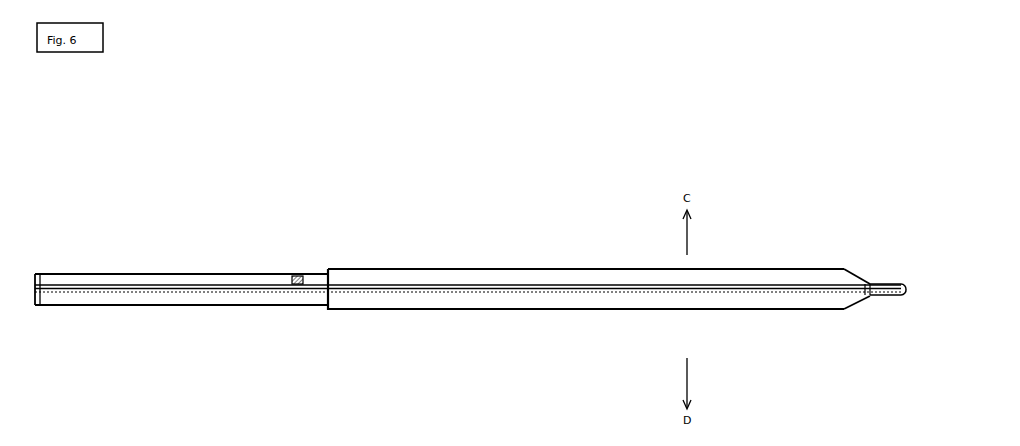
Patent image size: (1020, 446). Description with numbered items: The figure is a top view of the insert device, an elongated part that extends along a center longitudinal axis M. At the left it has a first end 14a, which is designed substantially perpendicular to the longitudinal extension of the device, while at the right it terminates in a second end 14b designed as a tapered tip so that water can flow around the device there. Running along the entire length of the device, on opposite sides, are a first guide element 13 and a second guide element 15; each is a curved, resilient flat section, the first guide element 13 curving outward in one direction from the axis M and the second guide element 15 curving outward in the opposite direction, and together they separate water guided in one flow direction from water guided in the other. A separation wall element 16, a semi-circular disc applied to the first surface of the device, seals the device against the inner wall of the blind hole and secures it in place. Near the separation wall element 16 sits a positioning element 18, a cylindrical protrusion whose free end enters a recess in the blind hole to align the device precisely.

The first guide element 13 is at (527, 275).
The first end 14a is at (49, 297).
The second end 14b is at (862, 298).
The second guide element 15 is at (447, 298).
The separation wall element 16 is at (327, 308).
The positioning element 18 is at (295, 275).
The center longitudinal axis M is at (863, 286).